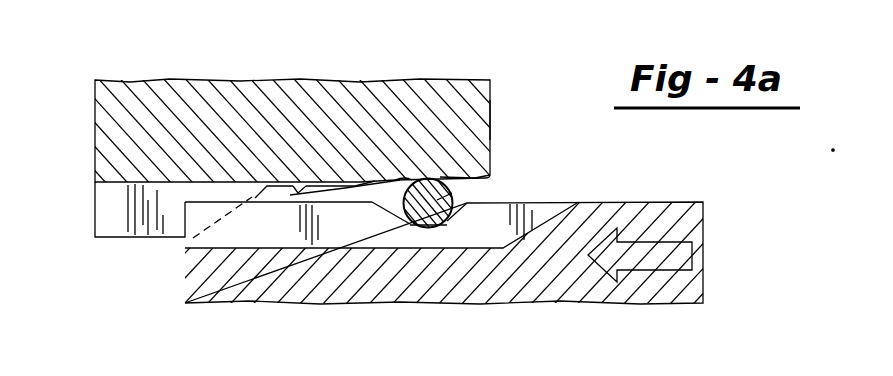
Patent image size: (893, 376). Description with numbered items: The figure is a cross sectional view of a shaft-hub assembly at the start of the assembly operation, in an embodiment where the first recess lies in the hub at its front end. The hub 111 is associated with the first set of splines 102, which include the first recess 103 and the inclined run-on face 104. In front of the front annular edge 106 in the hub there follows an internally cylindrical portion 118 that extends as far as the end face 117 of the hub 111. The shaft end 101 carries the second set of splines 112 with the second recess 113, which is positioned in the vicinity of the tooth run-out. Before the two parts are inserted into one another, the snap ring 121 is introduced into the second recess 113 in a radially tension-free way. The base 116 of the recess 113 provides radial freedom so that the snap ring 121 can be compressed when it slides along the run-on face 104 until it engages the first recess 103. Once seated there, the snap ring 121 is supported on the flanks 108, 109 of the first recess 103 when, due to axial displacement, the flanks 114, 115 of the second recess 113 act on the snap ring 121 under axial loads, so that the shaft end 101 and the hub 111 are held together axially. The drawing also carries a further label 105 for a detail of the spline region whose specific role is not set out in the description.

The shaft end 101 is at (215, 282).
The first set of splines 102 is at (120, 198).
The first recess 103 is at (297, 190).
The inclined run-on face 104 is at (362, 184).
The seal body 105 is at (295, 188).
The front annular edge 106 is at (392, 182).
The flank 108 is at (258, 192).
The flank 109 is at (316, 188).
The hub 111 is at (122, 122).
The second set of splines 112 is at (252, 228).
The second recess 113 is at (405, 226).
The flank 114 is at (447, 225).
The flank 115 is at (405, 215).
The base 116 is at (425, 227).
The end face 117 is at (490, 118).
The internally cylindrical portion 118 is at (458, 188).
The snap ring 121 is at (452, 193).